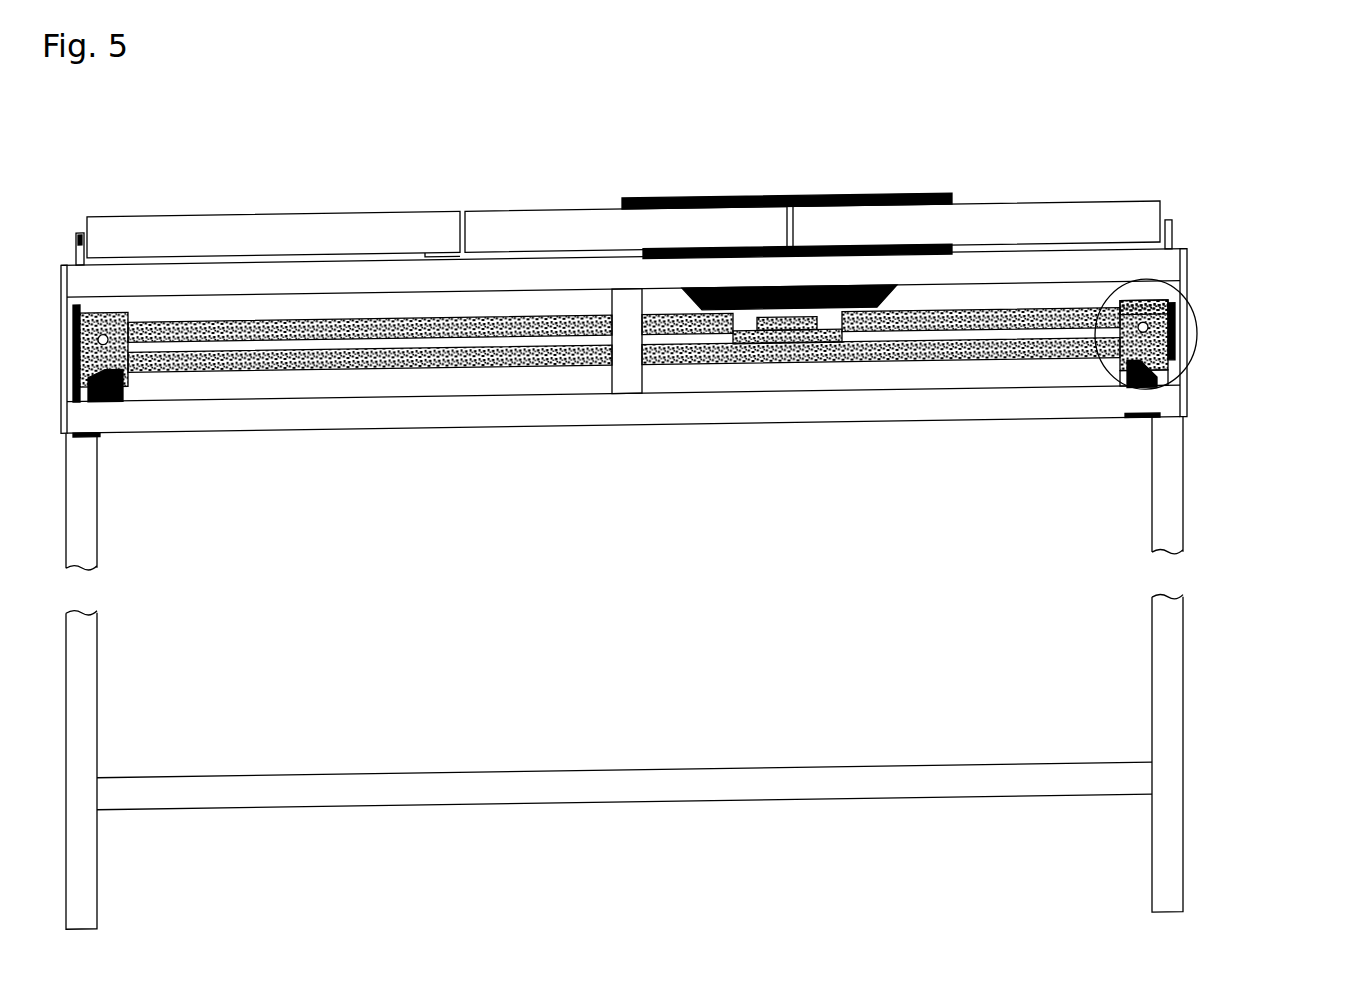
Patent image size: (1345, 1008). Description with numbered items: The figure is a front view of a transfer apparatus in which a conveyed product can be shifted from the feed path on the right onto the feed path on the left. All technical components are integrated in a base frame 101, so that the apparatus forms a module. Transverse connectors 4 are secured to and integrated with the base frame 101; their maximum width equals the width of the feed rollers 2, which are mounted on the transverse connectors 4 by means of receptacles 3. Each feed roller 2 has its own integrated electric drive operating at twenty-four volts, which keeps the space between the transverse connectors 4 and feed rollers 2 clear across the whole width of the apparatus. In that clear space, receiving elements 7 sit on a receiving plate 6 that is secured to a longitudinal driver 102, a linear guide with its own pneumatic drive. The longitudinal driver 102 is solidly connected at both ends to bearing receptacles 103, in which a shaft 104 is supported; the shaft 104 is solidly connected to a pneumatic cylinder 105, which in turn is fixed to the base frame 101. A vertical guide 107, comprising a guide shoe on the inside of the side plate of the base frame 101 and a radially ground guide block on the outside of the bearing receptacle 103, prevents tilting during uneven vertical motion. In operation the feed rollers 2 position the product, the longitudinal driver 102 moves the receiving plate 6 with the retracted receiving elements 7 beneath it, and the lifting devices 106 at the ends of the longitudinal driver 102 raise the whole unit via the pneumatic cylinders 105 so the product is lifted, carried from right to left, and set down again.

The feed rollers 2 is at (153, 238).
The receptacles 3 is at (82, 262).
The transverse connectors 4 is at (208, 285).
The receiving plate 6 is at (713, 312).
The receiving elements 7 is at (797, 195).
The base frame 101 is at (1170, 404).
The longitudinal driver 102 is at (929, 320).
The bearing receptacles 103 is at (1170, 335).
The shaft 104 is at (1165, 302).
The pneumatic cylinder 105 is at (1112, 381).
The lifting devices 106 is at (1127, 382).
The vertical guide 107 is at (98, 393).